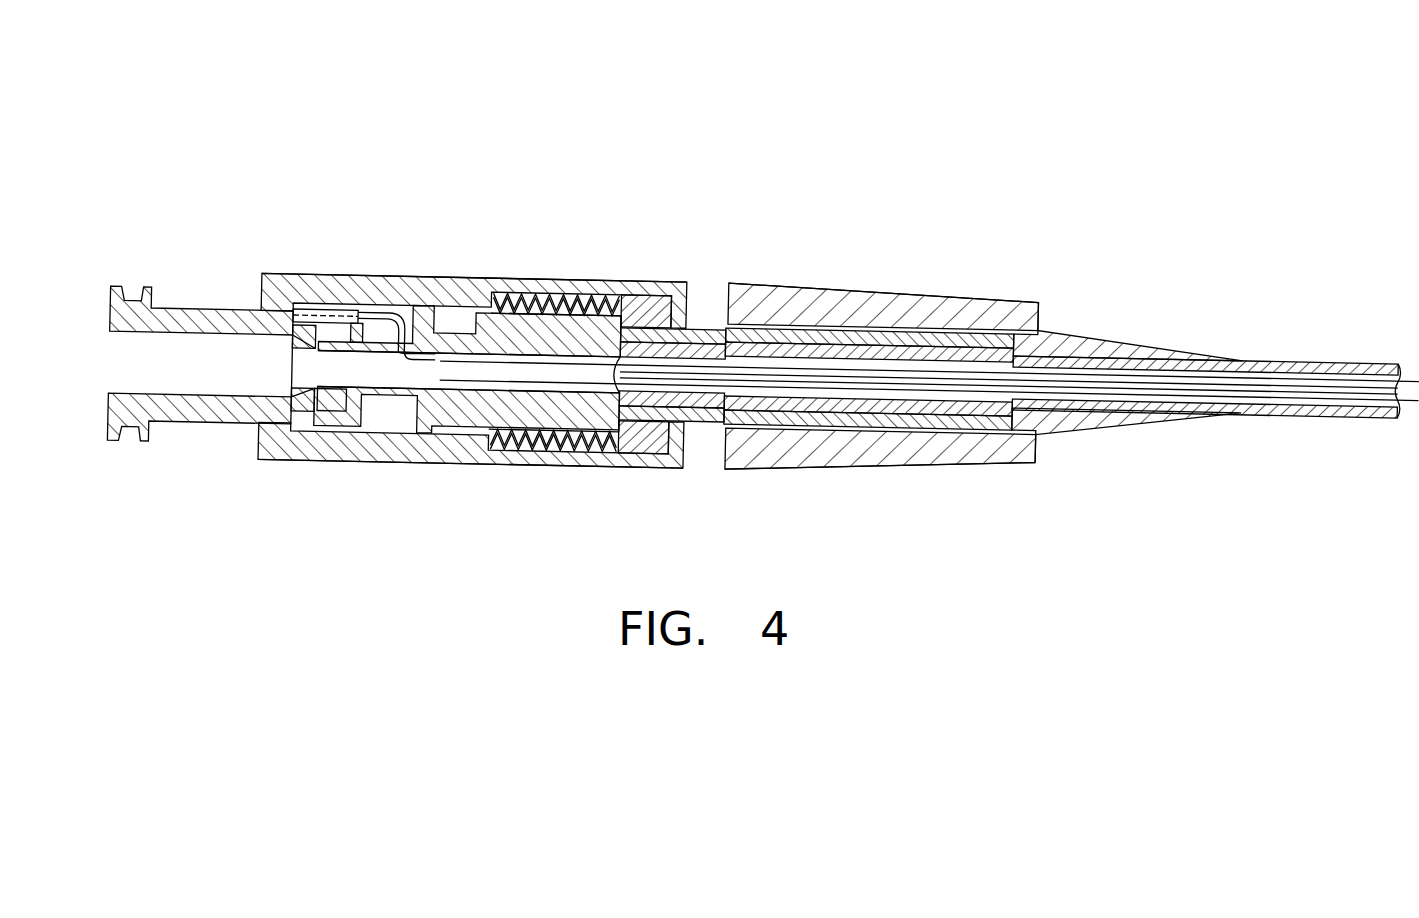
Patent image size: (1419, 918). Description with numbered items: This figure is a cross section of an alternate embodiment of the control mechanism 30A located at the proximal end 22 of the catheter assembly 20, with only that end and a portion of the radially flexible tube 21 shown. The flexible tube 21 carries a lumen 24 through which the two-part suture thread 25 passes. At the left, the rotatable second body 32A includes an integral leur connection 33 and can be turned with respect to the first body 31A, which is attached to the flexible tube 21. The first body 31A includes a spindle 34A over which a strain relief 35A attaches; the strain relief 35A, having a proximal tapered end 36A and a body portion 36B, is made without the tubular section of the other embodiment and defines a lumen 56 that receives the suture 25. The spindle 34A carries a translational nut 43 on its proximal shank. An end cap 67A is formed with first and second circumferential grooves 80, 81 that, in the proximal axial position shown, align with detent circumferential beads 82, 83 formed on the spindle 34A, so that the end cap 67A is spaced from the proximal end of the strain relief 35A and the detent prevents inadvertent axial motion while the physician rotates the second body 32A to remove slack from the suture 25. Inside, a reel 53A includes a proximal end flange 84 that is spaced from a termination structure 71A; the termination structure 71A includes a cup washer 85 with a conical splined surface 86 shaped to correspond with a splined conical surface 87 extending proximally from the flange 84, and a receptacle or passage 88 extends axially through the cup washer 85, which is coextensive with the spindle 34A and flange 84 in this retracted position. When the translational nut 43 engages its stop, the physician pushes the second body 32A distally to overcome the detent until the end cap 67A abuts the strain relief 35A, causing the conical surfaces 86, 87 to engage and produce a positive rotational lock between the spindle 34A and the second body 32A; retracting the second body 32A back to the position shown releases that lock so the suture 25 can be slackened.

The catheter assembly 20 is at (900, 523).
The radially flexible tube 21 is at (1270, 410).
The proximal end 22 is at (803, 226).
The lumen 24 is at (1258, 385).
The suture thread 25 is at (400, 292).
The control mechanism 30A is at (538, 148).
The first body 31A is at (1047, 310).
The second body 32A is at (358, 275).
The leur connection 33 is at (135, 437).
The spindle 34A is at (568, 285).
The strain relief 35A is at (1042, 445).
The proximal tapered end 36A is at (1100, 336).
The body portion 36B is at (912, 290).
The translational nut 43 is at (512, 468).
The reel 53A is at (357, 312).
The lumen 56 is at (448, 395).
The end cap 67A is at (704, 285).
The termination structure 71A is at (290, 355).
The first circumferential groove 80 is at (627, 285).
The second circumferential groove 81 is at (653, 282).
The detent circumferential bead 82 is at (623, 470).
The detent circumferential bead 83 is at (655, 472).
The proximal end flange 84 is at (374, 455).
The cup washer 85 is at (292, 460).
The conical splined surface 86 is at (262, 345).
The splined conical surface 87 is at (330, 440).
The passage 88 is at (322, 312).